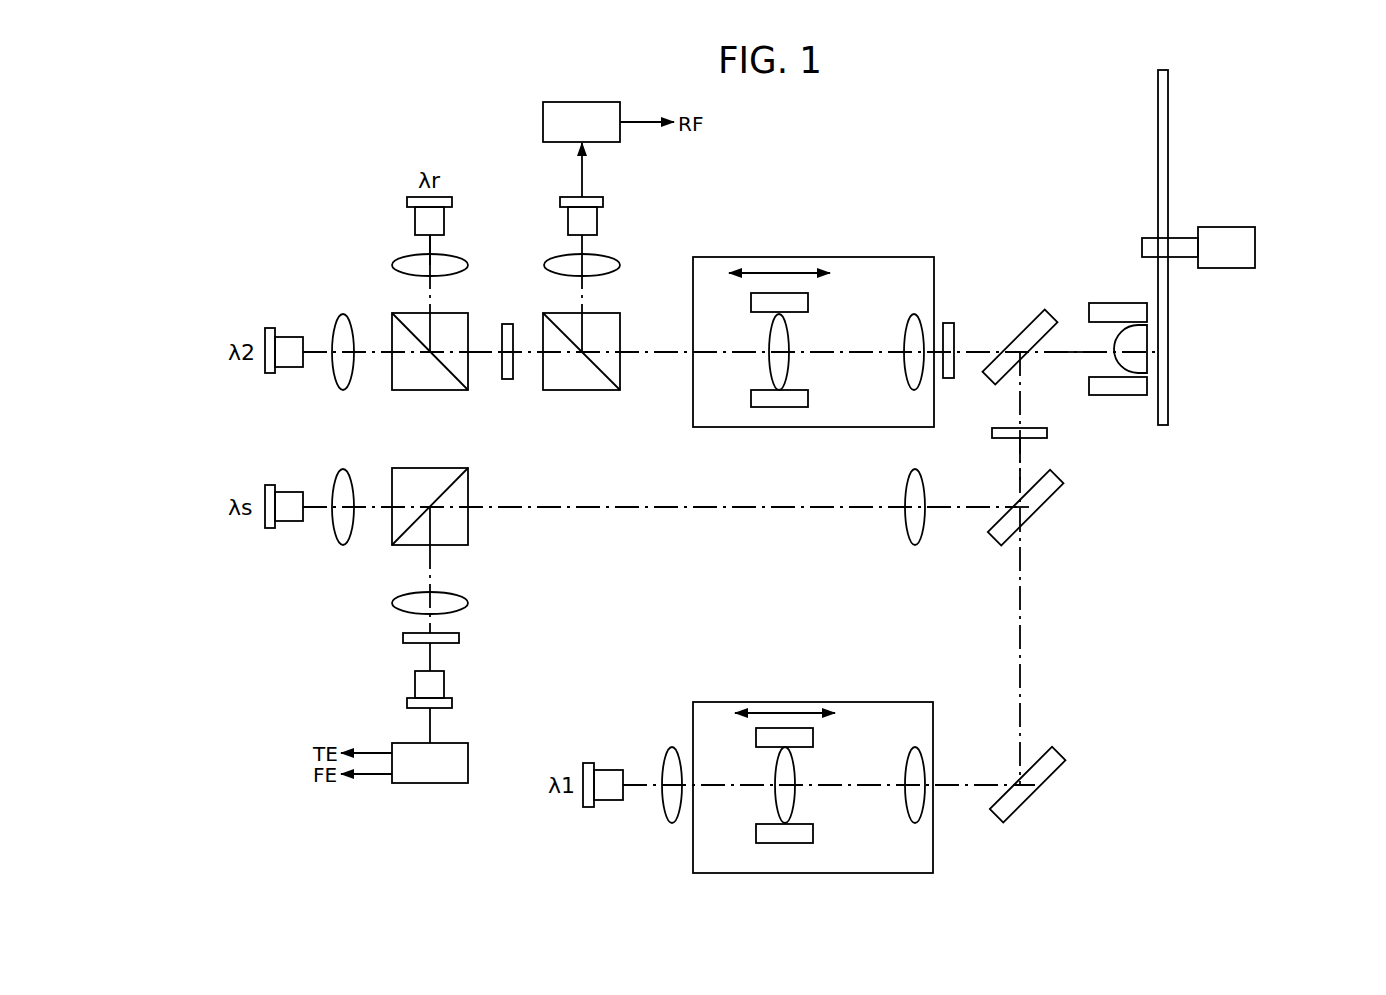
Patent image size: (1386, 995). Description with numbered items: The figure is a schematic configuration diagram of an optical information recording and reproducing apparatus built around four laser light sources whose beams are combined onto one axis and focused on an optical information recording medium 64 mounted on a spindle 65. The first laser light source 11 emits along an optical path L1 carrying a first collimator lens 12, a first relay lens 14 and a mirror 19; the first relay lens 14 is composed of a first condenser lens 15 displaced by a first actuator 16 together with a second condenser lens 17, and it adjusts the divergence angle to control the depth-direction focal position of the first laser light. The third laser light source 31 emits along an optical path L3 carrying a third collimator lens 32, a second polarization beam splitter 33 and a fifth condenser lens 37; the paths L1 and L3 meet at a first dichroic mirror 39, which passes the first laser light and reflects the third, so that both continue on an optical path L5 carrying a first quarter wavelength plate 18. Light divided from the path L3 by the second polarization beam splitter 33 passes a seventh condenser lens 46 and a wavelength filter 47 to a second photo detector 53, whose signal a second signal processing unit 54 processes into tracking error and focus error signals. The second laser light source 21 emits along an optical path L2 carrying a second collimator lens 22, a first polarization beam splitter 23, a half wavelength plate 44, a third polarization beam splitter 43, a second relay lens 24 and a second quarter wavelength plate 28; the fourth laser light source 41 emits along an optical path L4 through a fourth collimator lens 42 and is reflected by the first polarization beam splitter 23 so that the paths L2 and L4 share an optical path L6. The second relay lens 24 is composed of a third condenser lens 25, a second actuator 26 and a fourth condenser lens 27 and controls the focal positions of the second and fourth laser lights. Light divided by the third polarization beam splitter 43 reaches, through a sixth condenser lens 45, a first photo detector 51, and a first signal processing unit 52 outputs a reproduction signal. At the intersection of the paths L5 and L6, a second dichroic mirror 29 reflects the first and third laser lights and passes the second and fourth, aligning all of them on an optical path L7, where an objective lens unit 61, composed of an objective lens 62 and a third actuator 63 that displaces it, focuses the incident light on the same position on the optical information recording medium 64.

The first laser light source 11 is at (609, 769).
The first collimator lens 12 is at (670, 749).
The first relay lens 14 is at (878, 702).
The first condenser lens 15 is at (795, 770).
The first actuator 16 is at (813, 737).
The second condenser lens 17 is at (909, 749).
The first quarter wavelength plate 18 is at (1034, 428).
The mirror 19 is at (1061, 766).
The second laser light source 21 is at (291, 337).
The second collimator lens 22 is at (343, 313).
The first polarization beam splitter 23 is at (408, 313).
The second relay lens 24 is at (818, 257).
The third condenser lens 25 is at (789, 339).
The second actuator 26 is at (808, 302).
The fourth condenser lens 27 is at (910, 315).
The second quarter wavelength plate 28 is at (951, 323).
The second dichroic mirror 29 is at (1039, 315).
The third laser light source 31 is at (291, 492).
The third collimator lens 32 is at (343, 468).
The second polarization beam splitter 33 is at (461, 468).
The fifth condenser lens 37 is at (918, 487).
The first dichroic mirror 39 is at (1062, 483).
The fourth laser light source 41 is at (444, 213).
The fourth collimator lens 42 is at (456, 262).
The third polarization beam splitter 43 is at (611, 313).
The half wavelength plate 44 is at (509, 324).
The sixth condenser lens 45 is at (610, 262).
The seventh condenser lens 46 is at (455, 598).
The wavelength filter 47 is at (459, 638).
The first photo detector 51 is at (597, 213).
The first signal processing unit 52 is at (592, 100).
The second photo detector 53 is at (444, 679).
The second signal processing unit 54 is at (468, 762).
The objective lens unit 61 is at (1169, 346).
The objective lens 62 is at (1137, 337).
The third actuator 63 is at (1137, 312).
The optical information recording medium 64 is at (1168, 110).
The spindle 65 is at (1255, 245).
The optical path L1 is at (638, 776).
The optical path L2 is at (316, 345).
The optical path L3 is at (316, 500).
The optical path L4 is at (429, 251).
The optical path L5 is at (1018, 462).
The optical path L6 is at (489, 344).
The optical path L7 is at (1072, 345).